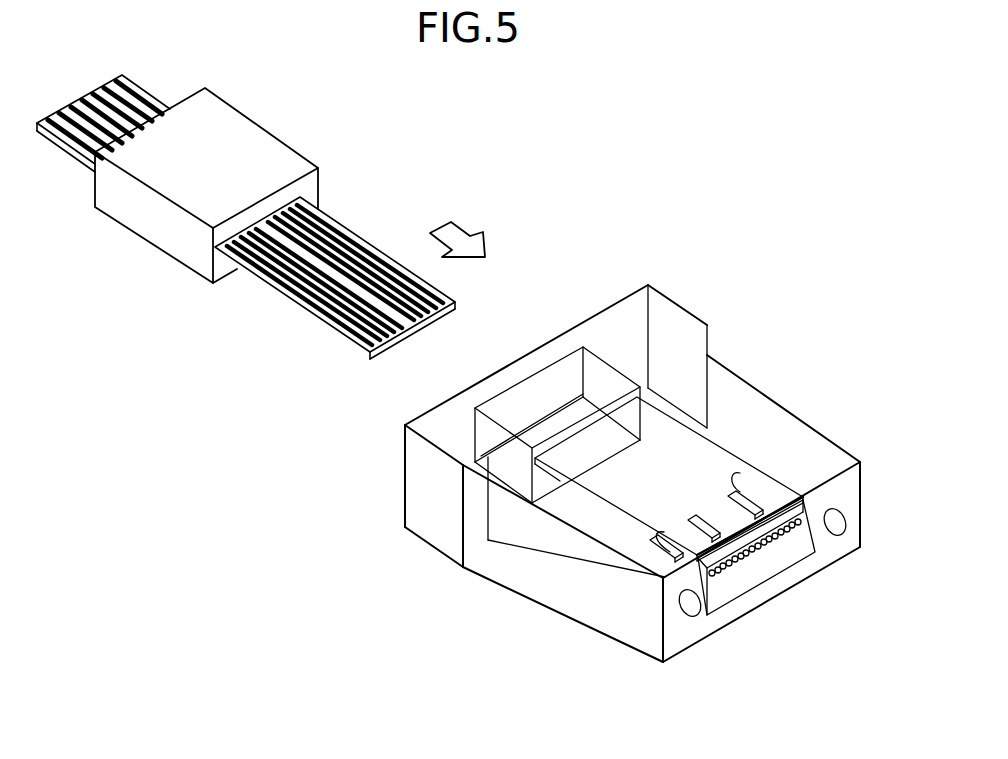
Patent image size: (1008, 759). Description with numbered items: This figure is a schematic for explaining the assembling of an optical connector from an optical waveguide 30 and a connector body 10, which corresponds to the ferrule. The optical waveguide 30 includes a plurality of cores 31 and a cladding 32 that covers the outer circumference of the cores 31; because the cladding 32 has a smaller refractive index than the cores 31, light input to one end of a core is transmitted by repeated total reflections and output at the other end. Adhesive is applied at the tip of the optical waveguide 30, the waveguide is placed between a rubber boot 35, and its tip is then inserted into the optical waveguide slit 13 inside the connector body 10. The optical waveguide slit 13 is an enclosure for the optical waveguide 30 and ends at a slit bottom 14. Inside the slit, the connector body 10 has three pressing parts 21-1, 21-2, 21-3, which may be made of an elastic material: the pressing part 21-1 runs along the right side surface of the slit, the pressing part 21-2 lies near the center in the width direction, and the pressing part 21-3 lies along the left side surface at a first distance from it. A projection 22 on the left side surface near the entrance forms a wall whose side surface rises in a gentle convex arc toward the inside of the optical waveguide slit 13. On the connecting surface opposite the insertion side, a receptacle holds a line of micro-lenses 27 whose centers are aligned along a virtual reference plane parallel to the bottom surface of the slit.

The connector body 10 is at (737, 387).
The optical waveguide slit 13 is at (755, 505).
The slit bottom 14 is at (663, 533).
The pressing part 21-1 is at (653, 545).
The pressing part 21-2 is at (667, 515).
The pressing part 21-3 is at (787, 472).
The projection 22 is at (737, 487).
The micro-lenses 27 is at (714, 578).
The optical waveguide 30 is at (246, 244).
The cores 31 is at (250, 338).
The cladding 32 is at (288, 293).
The rubber boot 35 is at (243, 138).